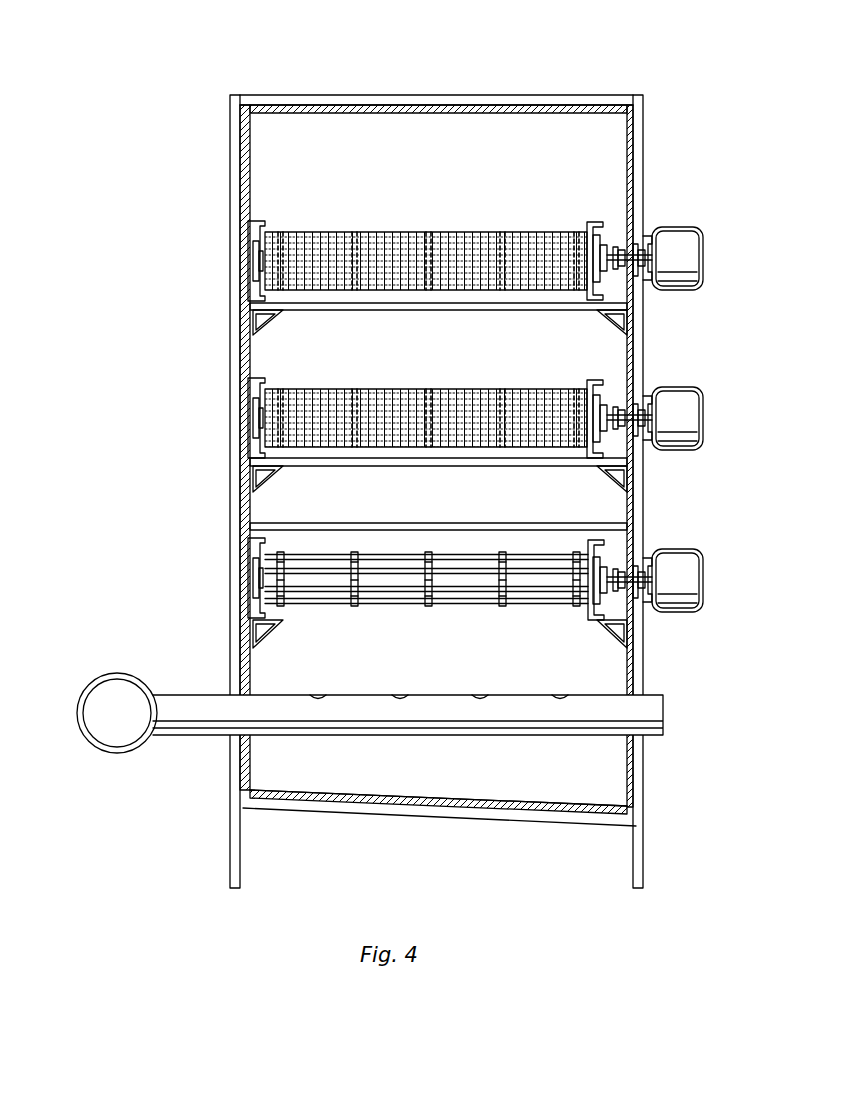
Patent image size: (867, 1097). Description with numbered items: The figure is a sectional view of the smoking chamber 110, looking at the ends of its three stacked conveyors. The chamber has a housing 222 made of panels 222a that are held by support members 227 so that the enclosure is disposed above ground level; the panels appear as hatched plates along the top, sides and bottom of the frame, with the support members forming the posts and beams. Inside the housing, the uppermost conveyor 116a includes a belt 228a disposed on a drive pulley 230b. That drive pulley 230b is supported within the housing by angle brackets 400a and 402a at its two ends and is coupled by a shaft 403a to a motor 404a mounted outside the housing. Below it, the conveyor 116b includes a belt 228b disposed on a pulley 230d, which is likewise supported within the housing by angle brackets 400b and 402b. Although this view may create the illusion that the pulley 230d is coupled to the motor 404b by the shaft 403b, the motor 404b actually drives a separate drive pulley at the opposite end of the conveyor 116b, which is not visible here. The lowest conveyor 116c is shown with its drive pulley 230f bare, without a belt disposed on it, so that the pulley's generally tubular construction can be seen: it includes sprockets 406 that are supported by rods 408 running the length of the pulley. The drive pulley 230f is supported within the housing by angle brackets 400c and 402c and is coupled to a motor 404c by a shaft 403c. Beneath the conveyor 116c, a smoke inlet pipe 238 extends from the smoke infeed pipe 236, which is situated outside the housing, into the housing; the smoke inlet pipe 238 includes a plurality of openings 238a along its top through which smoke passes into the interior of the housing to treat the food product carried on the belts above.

The smoking chamber 110 is at (186, 112).
The housing 222 is at (432, 453).
The panels 222a is at (384, 113).
The support members 227 is at (455, 94).
The conveyor 116a is at (523, 245).
The conveyor 116b is at (523, 404).
The conveyor 116c is at (522, 566).
The belt 228a is at (455, 232).
The belt 228b is at (455, 389).
The angle bracket 402a is at (262, 222).
The angle bracket 402b is at (262, 378).
The angle bracket 402c is at (262, 538).
The angle bracket 400a is at (595, 220).
The angle bracket 400b is at (595, 378).
The angle bracket 400c is at (596, 538).
The drive pulley 230b is at (612, 254).
The pulley 230d is at (612, 414).
The drive pulley 230f is at (612, 576).
The shaft 403a is at (612, 278).
The shaft 403b is at (612, 438).
The shaft 403c is at (612, 600).
The motor 404a is at (705, 258).
The motor 404b is at (705, 418).
The motor 404c is at (705, 580).
The sprockets 406 is at (427, 612).
The rods 408 is at (462, 552).
The smoke infeed pipe 236 is at (105, 752).
The smoke inlet pipe 238 is at (408, 722).
The openings 238a is at (320, 692).